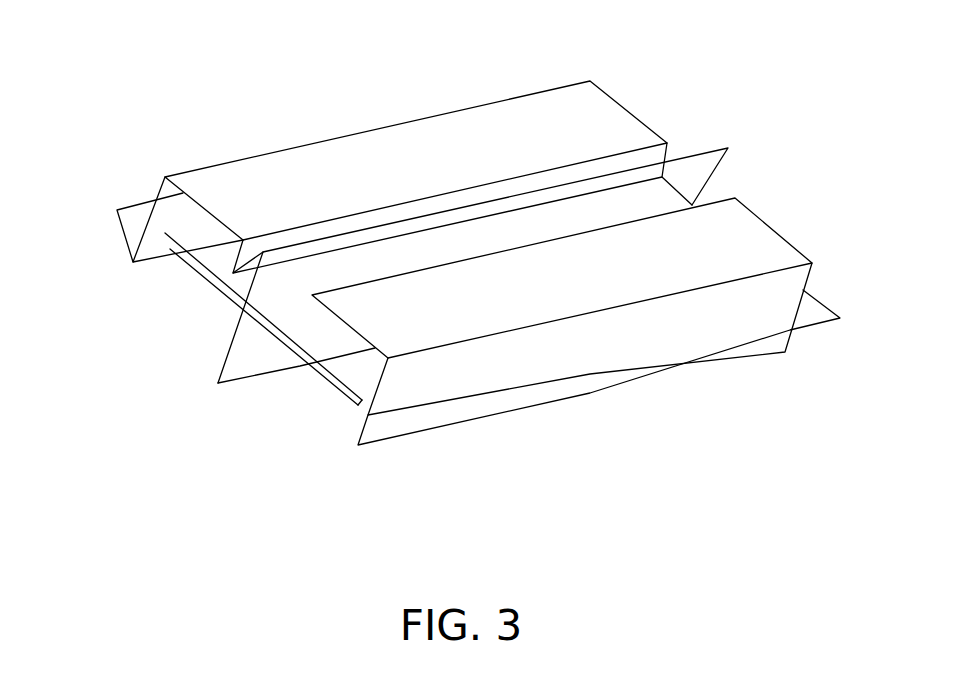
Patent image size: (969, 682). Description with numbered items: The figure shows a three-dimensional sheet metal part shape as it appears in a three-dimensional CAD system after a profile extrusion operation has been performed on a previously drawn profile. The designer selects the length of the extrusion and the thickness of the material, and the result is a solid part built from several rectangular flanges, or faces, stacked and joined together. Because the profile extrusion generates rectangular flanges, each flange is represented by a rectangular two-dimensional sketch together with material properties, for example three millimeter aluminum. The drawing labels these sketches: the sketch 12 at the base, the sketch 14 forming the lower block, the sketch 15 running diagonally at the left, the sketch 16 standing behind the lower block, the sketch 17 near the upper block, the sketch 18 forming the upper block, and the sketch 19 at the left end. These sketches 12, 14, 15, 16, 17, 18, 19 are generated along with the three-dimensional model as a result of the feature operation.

The sketch 12 is at (599, 427).
The sketch 14 is at (592, 283).
The sketch 15 is at (263, 365).
The sketch 16 is at (516, 238).
The sketch 17 is at (515, 150).
The sketch 18 is at (413, 156).
The sketch 19 is at (147, 193).